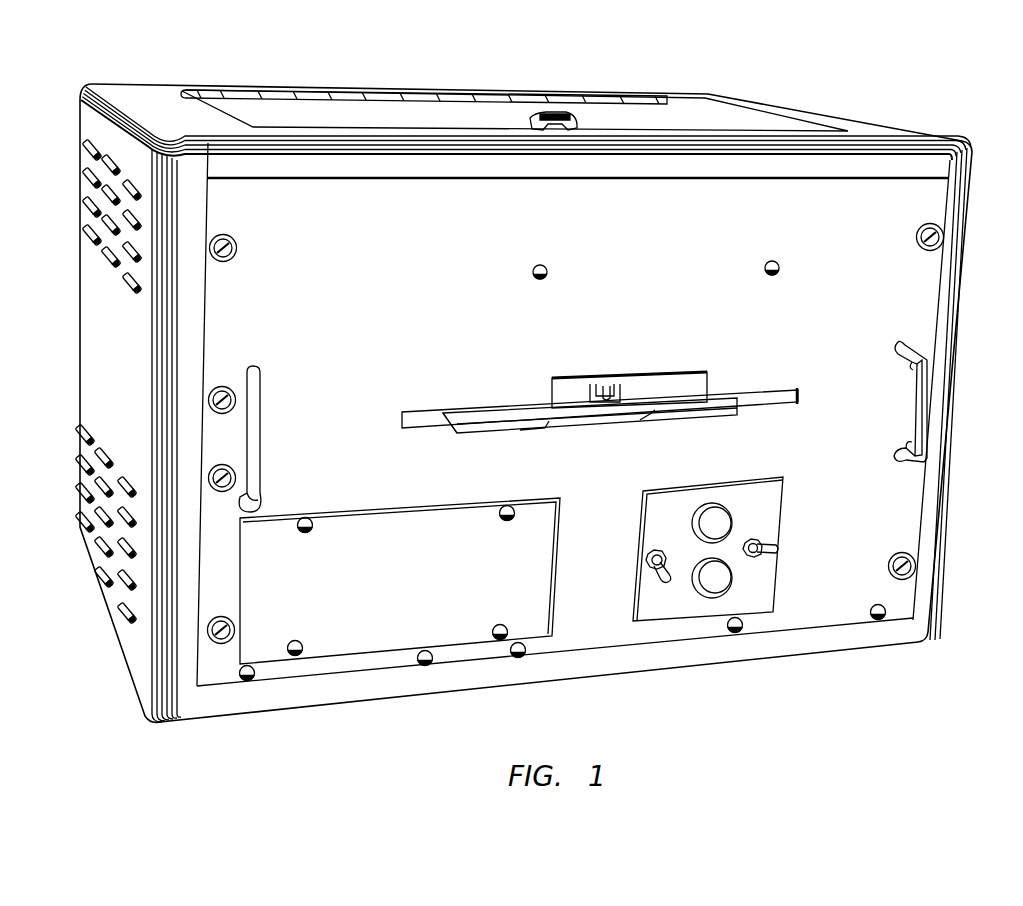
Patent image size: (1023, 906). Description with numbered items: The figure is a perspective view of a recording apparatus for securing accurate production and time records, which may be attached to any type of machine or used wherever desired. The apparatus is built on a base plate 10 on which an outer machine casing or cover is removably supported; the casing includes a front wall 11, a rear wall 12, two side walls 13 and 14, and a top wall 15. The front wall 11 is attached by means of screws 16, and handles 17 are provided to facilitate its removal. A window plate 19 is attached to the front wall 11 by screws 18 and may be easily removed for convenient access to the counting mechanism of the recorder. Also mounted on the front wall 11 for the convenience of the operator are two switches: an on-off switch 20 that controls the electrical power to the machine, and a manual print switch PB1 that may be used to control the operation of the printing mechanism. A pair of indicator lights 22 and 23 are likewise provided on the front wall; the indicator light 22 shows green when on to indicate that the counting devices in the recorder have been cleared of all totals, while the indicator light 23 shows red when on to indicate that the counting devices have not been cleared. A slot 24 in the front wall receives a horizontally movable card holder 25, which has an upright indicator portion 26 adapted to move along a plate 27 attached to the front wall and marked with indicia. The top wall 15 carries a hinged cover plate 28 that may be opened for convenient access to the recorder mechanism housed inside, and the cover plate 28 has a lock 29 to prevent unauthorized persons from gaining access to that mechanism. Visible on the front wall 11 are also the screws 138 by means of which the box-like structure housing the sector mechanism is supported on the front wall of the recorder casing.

The base plate 10 is at (601, 668).
The front wall 11 is at (917, 503).
The rear wall 12 is at (686, 92).
The side wall 13 is at (968, 280).
The side wall 14 is at (86, 300).
The top wall 15 is at (882, 127).
The screws 16 is at (240, 248).
The handles 17 is at (264, 438).
The screws 18 is at (310, 528).
The window plate 19 is at (422, 510).
The on-off switch 20 is at (665, 582).
The indicator light 22 is at (718, 506).
The indicator light 23 is at (697, 591).
The slot 24 is at (799, 396).
The card holder 25 is at (540, 428).
The indicator portion 26 is at (616, 383).
The plate 27 is at (708, 380).
The cover plate 28 is at (356, 102).
The lock 29 is at (578, 119).
The screws 138 is at (549, 272).
The manual print switch PB1 is at (778, 548).